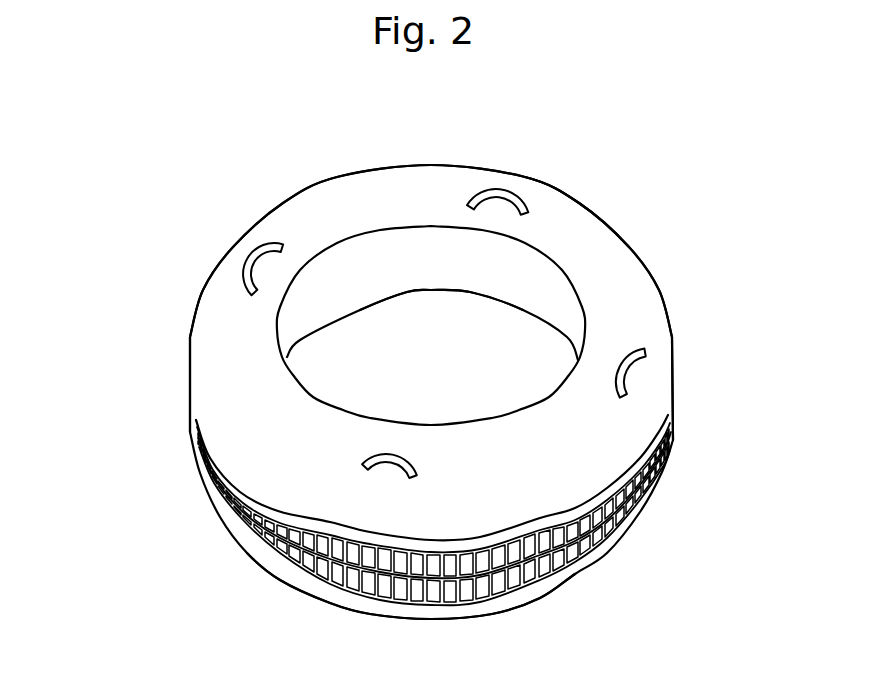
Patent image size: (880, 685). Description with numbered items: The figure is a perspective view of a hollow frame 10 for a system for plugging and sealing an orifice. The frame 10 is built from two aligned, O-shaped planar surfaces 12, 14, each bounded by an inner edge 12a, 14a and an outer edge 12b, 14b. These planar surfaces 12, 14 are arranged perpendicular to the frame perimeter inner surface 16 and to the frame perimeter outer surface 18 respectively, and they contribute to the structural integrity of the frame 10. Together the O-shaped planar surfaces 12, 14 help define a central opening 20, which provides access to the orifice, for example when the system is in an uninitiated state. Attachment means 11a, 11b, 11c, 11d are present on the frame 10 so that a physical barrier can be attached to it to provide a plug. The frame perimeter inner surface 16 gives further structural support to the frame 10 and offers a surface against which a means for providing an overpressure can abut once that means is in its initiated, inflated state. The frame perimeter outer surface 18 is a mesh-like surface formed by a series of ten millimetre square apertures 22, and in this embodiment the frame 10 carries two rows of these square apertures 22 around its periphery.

The hollow frame 10 is at (163, 352).
The attachment means 11a is at (483, 193).
The attachment means 11b is at (637, 365).
The attachment means 11c is at (412, 478).
The attachment means 11d is at (258, 262).
The O-shaped planar surface 12 is at (225, 342).
The inner edge 12a is at (333, 247).
The outer edge 12b is at (533, 182).
The O-shaped planar surface 14 is at (247, 553).
The inner edge 14a is at (407, 290).
The outer edge 14b is at (310, 593).
The frame perimeter inner surface 16 is at (543, 287).
The frame perimeter outer surface 18 is at (385, 602).
The central opening 20 is at (523, 350).
The square apertures 22 is at (577, 560).